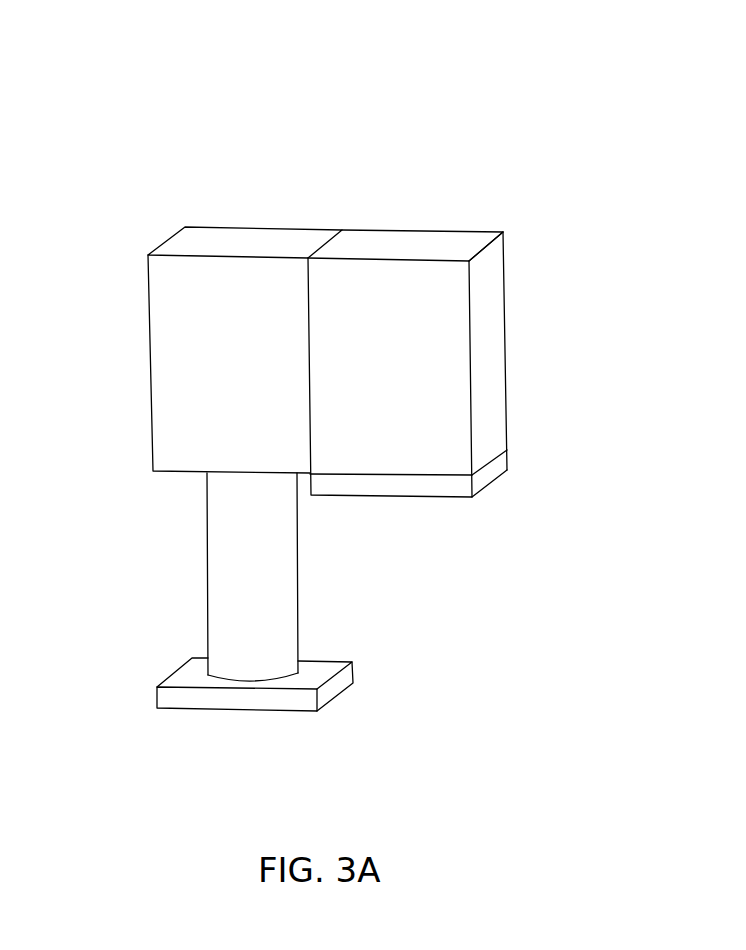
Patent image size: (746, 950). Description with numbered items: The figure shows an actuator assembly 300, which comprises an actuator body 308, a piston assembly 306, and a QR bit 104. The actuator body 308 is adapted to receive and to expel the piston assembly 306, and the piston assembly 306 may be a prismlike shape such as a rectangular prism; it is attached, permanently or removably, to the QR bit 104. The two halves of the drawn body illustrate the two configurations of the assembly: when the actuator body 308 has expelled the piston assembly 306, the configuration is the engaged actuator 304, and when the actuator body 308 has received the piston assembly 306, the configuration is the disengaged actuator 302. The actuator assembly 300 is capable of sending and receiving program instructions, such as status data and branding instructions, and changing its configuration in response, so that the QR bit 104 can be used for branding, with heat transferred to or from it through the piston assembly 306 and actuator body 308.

The actuator assembly 300 is at (612, 112).
The disengaged actuator 302 is at (510, 222).
The engaged actuator 304 is at (345, 222).
The piston assembly 306 is at (222, 583).
The actuator body 308 is at (498, 273).
The QR bit 104 is at (489, 476).